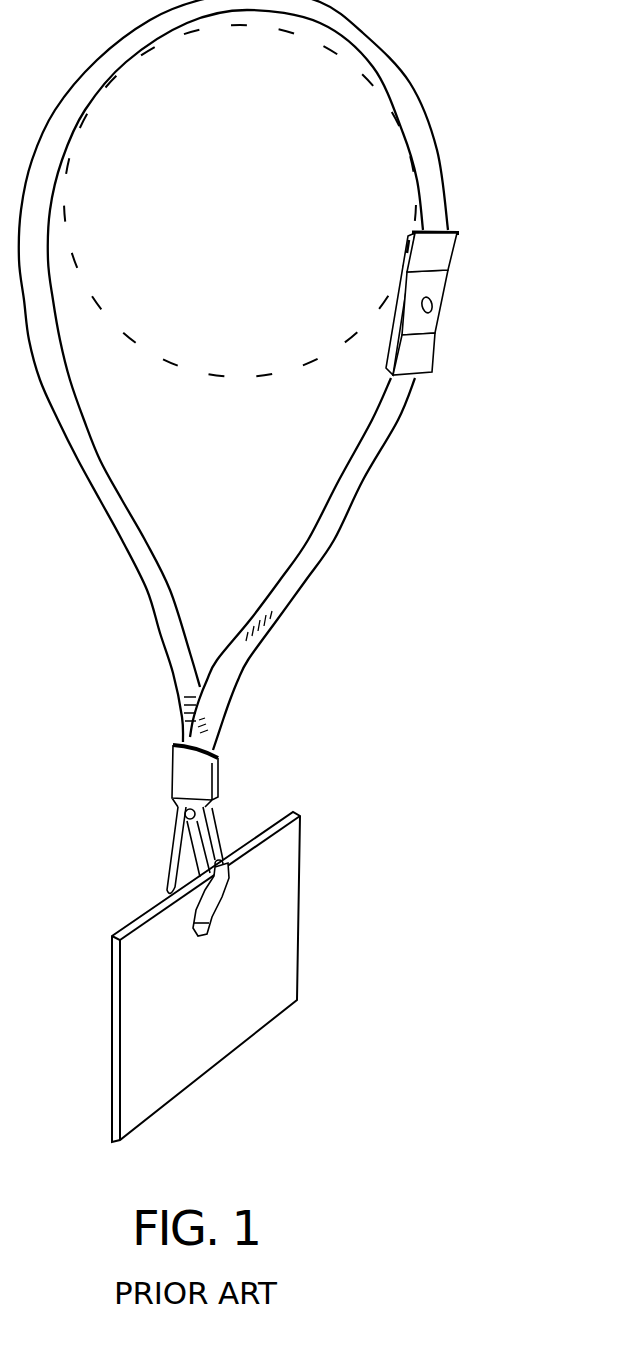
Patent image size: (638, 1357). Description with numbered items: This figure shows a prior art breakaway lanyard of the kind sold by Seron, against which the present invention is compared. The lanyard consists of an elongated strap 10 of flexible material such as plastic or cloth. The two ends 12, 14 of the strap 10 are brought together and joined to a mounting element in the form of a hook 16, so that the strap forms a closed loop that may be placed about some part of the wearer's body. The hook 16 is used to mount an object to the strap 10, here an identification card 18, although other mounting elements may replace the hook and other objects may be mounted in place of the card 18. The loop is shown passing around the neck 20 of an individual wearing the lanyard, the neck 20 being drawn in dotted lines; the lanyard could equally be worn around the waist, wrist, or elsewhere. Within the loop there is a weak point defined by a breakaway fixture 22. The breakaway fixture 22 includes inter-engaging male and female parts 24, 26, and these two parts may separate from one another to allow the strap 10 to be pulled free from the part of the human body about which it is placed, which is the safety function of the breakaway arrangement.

The strap 10 is at (363, 487).
The end of the strap 12 is at (218, 688).
The end of the strap 14 is at (152, 615).
The hook 16 is at (185, 777).
The identification card 18 is at (287, 863).
The neck 20 is at (245, 378).
The breakaway fixture 22 is at (456, 291).
The male part 24 is at (455, 240).
The female part 26 is at (432, 363).